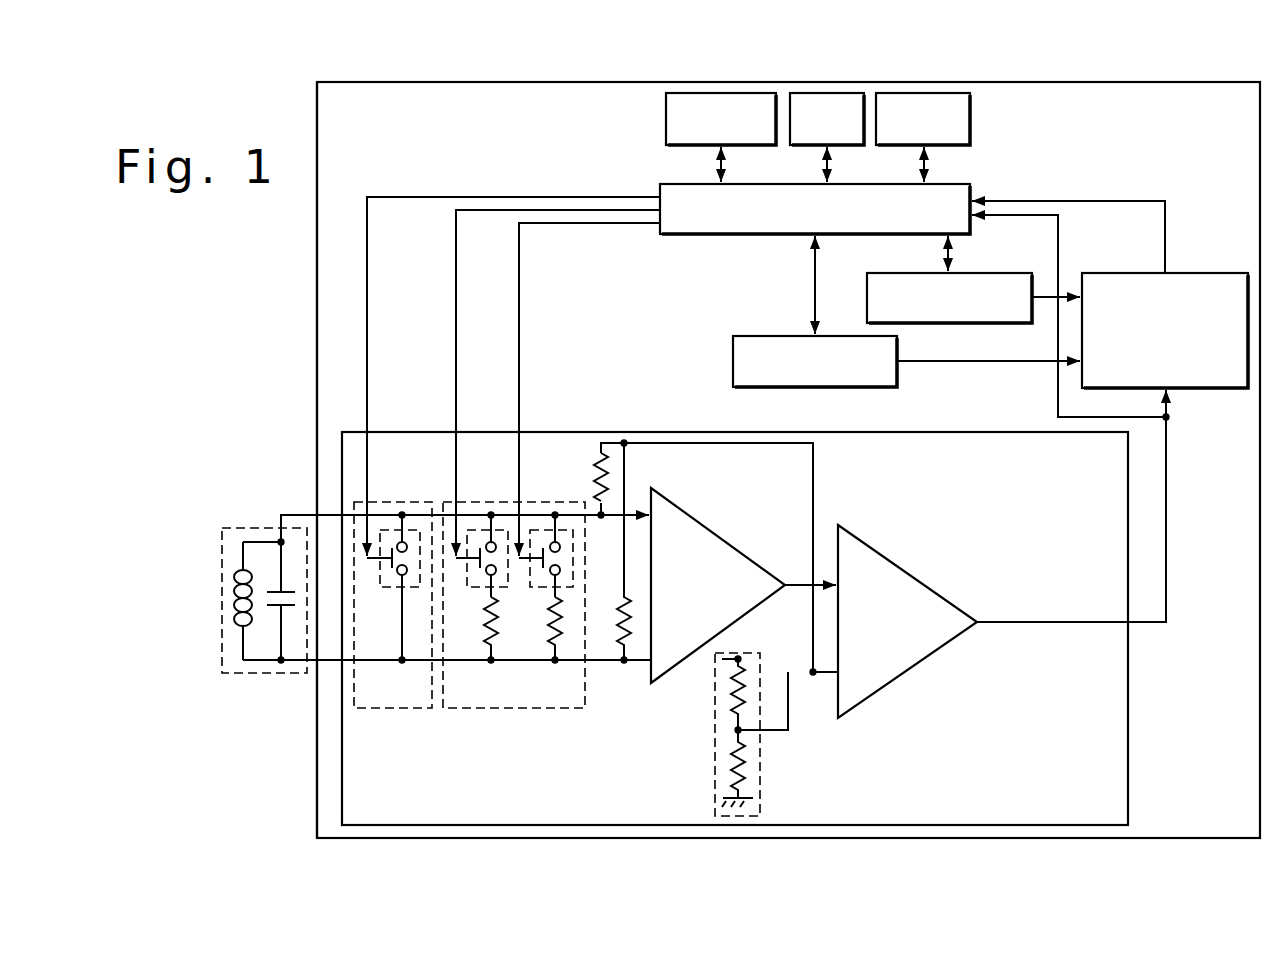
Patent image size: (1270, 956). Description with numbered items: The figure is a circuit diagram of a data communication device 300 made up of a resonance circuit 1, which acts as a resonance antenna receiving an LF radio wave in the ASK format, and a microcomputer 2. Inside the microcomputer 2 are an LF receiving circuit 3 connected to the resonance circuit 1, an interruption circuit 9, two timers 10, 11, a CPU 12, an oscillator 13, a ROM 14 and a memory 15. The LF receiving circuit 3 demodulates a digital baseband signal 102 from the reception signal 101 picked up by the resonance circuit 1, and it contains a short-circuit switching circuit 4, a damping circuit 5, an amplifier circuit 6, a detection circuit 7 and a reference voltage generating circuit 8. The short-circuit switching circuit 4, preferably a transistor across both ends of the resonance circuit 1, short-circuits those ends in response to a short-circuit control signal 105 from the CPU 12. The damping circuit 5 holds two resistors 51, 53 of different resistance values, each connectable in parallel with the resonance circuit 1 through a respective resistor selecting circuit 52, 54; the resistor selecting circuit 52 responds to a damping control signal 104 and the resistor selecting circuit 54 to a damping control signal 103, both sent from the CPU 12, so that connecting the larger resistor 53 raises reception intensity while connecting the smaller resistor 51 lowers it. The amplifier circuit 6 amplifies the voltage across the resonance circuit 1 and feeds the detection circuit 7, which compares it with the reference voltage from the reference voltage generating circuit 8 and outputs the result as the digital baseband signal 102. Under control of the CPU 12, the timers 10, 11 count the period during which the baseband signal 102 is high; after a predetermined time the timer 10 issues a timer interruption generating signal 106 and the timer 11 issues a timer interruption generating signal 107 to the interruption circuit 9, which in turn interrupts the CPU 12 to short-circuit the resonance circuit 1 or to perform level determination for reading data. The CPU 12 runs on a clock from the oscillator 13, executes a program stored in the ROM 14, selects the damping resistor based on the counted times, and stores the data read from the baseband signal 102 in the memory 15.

The data communication device 300 is at (1238, 68).
The microcomputer 2 is at (317, 245).
The LF receiving circuit 3 is at (1128, 727).
The resonance circuit 1 is at (265, 673).
The reception signal 101 is at (302, 515).
The short-circuit switching circuit 4 is at (392, 708).
The damping circuit 5 is at (510, 708).
The resistor 51 is at (484, 623).
The resistor selecting circuit 52 is at (485, 530).
The resistor 53 is at (547, 623).
The resistor selecting circuit 54 is at (548, 530).
The amplifier circuit 6 is at (717, 530).
The detection circuit 7 is at (905, 677).
The reference voltage generating circuit 8 is at (762, 782).
The interruption circuit 9 is at (1196, 273).
The timer 10 is at (1003, 273).
The timer 11 is at (770, 336).
The CPU 12 is at (972, 190).
The oscillator 13 is at (718, 93).
The ROM 14 is at (824, 93).
The memory 15 is at (920, 93).
The digital baseband signal 102 is at (1166, 572).
The damping control signal 103 is at (519, 322).
The damping control signal 104 is at (456, 376).
The short-circuit control signal 105 is at (367, 322).
The timer interruption generating signal 106 is at (1042, 296).
The timer interruption generating signal 107 is at (995, 363).